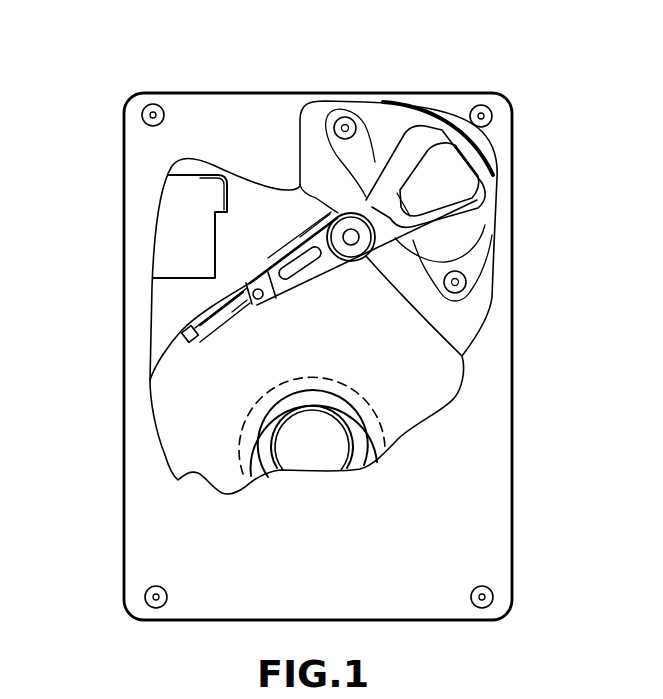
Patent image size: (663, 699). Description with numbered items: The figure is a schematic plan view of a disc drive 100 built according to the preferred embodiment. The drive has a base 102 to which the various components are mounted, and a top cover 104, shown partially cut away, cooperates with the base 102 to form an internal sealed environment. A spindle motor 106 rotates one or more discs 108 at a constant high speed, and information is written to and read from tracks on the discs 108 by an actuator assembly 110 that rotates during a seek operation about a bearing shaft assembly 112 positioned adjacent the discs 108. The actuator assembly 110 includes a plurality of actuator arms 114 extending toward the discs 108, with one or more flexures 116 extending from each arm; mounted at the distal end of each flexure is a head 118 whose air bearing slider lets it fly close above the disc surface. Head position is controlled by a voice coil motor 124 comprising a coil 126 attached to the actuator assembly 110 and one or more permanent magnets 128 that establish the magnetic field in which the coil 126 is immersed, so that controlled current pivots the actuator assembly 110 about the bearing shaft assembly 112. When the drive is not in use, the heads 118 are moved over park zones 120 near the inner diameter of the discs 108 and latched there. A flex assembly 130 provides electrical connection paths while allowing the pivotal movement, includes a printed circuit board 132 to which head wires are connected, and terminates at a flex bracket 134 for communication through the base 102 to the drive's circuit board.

The disc drive 100 is at (155, 70).
The base 102 is at (172, 323).
The top cover 104 is at (158, 517).
The spindle motor 106 is at (315, 452).
The discs 108 is at (427, 395).
The actuator assembly 110 is at (339, 257).
The bearing shaft assembly 112 is at (351, 237).
The actuator arms 114 is at (313, 283).
The flexures 116 is at (223, 313).
The head 118 is at (186, 340).
The park zones 120 is at (238, 451).
The voice coil motor 124 is at (371, 147).
The coil 126 is at (475, 179).
The permanent magnets 128 is at (370, 146).
The flex assembly 130 is at (294, 234).
The printed circuit board 132 is at (322, 212).
The flex bracket 134 is at (180, 238).